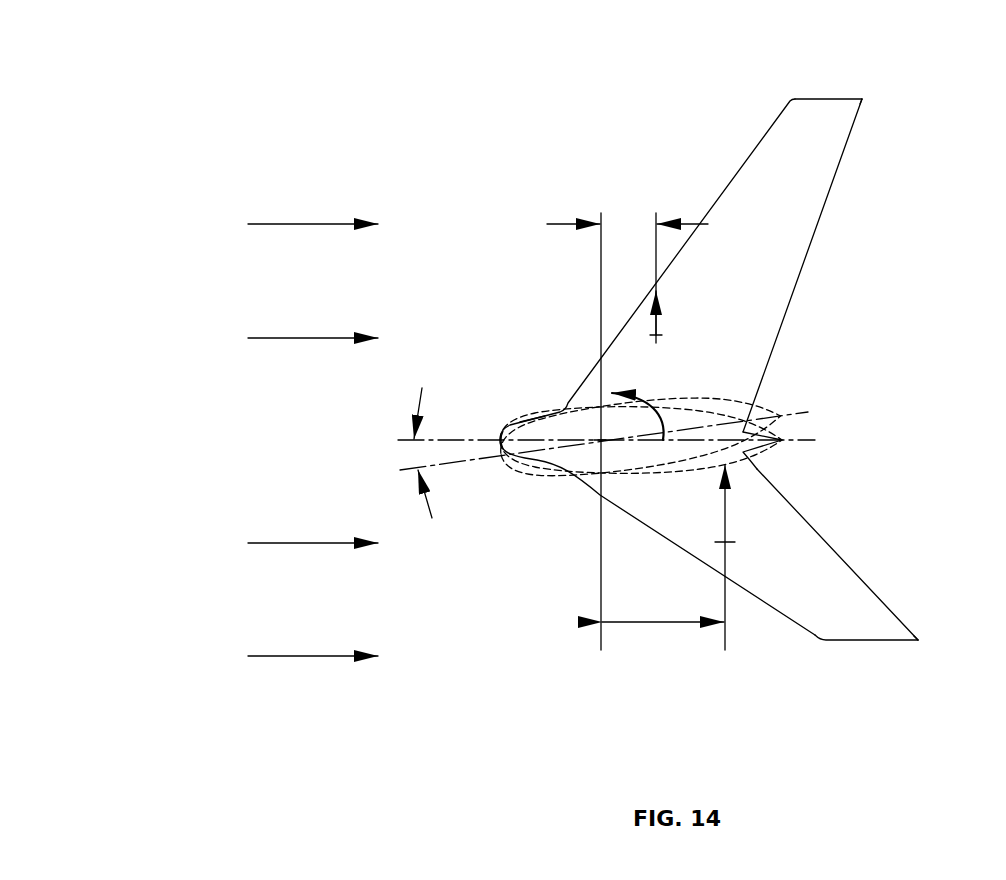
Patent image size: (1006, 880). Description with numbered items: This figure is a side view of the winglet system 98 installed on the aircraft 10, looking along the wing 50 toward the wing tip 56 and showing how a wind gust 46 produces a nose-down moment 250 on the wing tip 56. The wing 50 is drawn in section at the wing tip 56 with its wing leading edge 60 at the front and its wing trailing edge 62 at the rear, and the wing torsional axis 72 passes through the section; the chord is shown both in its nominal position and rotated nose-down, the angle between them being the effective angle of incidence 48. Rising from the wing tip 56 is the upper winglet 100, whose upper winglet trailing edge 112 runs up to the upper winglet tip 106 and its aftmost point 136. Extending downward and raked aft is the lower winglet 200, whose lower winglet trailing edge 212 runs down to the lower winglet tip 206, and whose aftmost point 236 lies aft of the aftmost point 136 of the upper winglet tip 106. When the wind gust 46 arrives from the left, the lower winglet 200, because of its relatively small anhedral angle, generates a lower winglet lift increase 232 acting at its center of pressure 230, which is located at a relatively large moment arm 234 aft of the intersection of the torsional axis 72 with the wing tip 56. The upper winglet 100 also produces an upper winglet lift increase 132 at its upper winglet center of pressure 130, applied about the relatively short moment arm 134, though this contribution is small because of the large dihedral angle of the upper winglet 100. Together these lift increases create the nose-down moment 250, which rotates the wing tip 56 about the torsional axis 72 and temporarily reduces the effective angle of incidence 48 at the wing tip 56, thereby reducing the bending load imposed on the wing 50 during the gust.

The aircraft 10 is at (751, 363).
The wind gust 46 is at (268, 224).
The effective angle of incidence 48 is at (428, 512).
The wing 50 is at (527, 419).
The wing tip 56 is at (498, 456).
The wing leading edge 60 is at (513, 430).
The wing trailing edge 62 is at (788, 441).
The torsional axis 72 is at (600, 441).
The winglet system 98 is at (768, 128).
The upper winglet 100 is at (719, 235).
The upper winglet tip 106 is at (827, 99).
The upper winglet trailing edge 112 is at (820, 223).
The upper winglet center of pressure 130 is at (657, 335).
The upper winglet lift increase 132 is at (657, 315).
The moment arm 134 is at (561, 222).
The aftmost point of upper winglet tip 136 is at (862, 99).
The lower winglet 200 is at (751, 567).
The lower winglet tip 206 is at (880, 642).
The lower winglet trailing edge 212 is at (853, 568).
The center of pressure 230 is at (730, 541).
The lower winglet lift increase 232 is at (723, 502).
The moment arm 234 is at (663, 623).
The aftmost point of lower winglet tip 236 is at (918, 640).
The nose-down moment 250 is at (640, 400).